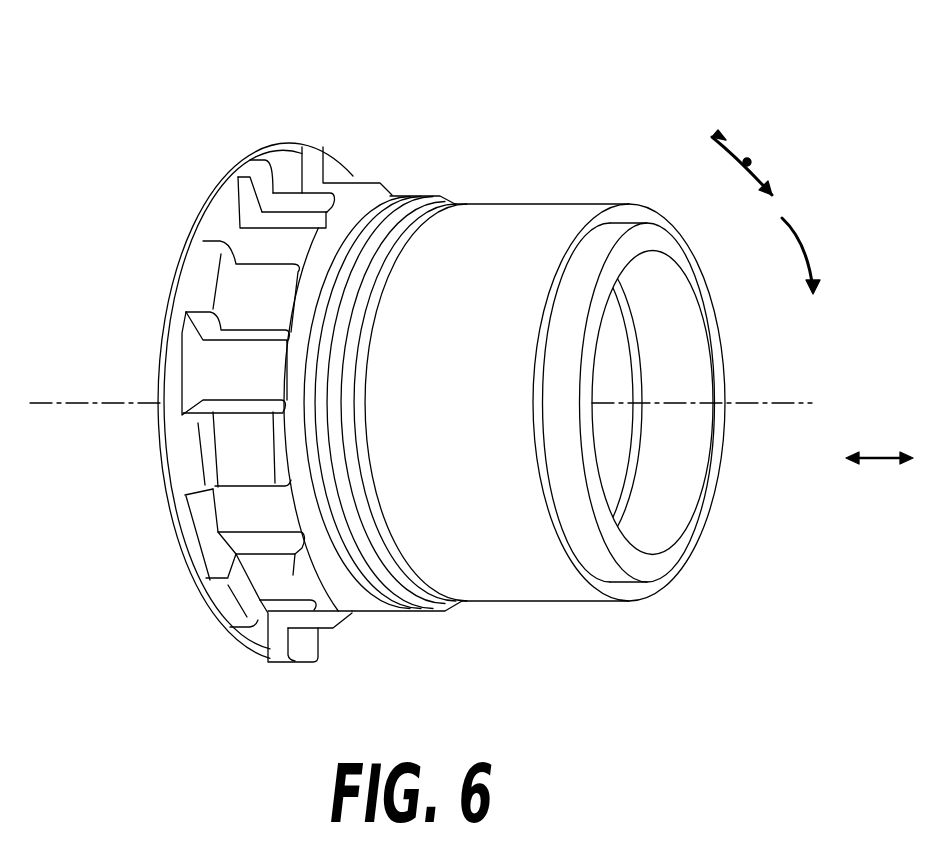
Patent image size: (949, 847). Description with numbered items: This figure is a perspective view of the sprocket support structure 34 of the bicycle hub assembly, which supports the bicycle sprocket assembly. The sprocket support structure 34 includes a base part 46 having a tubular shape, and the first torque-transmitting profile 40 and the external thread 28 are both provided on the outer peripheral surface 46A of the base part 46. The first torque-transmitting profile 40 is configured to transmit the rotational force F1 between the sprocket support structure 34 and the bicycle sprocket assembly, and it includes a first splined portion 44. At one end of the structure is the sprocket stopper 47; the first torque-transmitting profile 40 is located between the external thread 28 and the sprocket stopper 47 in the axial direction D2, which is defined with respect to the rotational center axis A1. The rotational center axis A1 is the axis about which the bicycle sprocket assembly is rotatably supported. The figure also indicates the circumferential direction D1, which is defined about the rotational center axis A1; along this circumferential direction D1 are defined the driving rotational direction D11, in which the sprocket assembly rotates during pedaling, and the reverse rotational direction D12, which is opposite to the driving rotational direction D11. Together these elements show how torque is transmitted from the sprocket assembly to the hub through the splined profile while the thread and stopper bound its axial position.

The sprocket support structure 34 is at (478, 93).
The sprocket stopper 47 is at (245, 170).
The first splined portion 44 is at (293, 202).
The first torque-transmitting profile 40 is at (363, 160).
The external thread 28 is at (413, 198).
The base part 46 is at (485, 202).
The outer peripheral surface 46A is at (538, 222).
The circumferential direction D1 is at (852, 80).
The reverse rotational direction D12 is at (735, 148).
The driving rotational direction D11 is at (765, 178).
The rotational force F1 is at (810, 250).
The rotational center axis A1 is at (790, 386).
The axial direction D2 is at (879, 489).